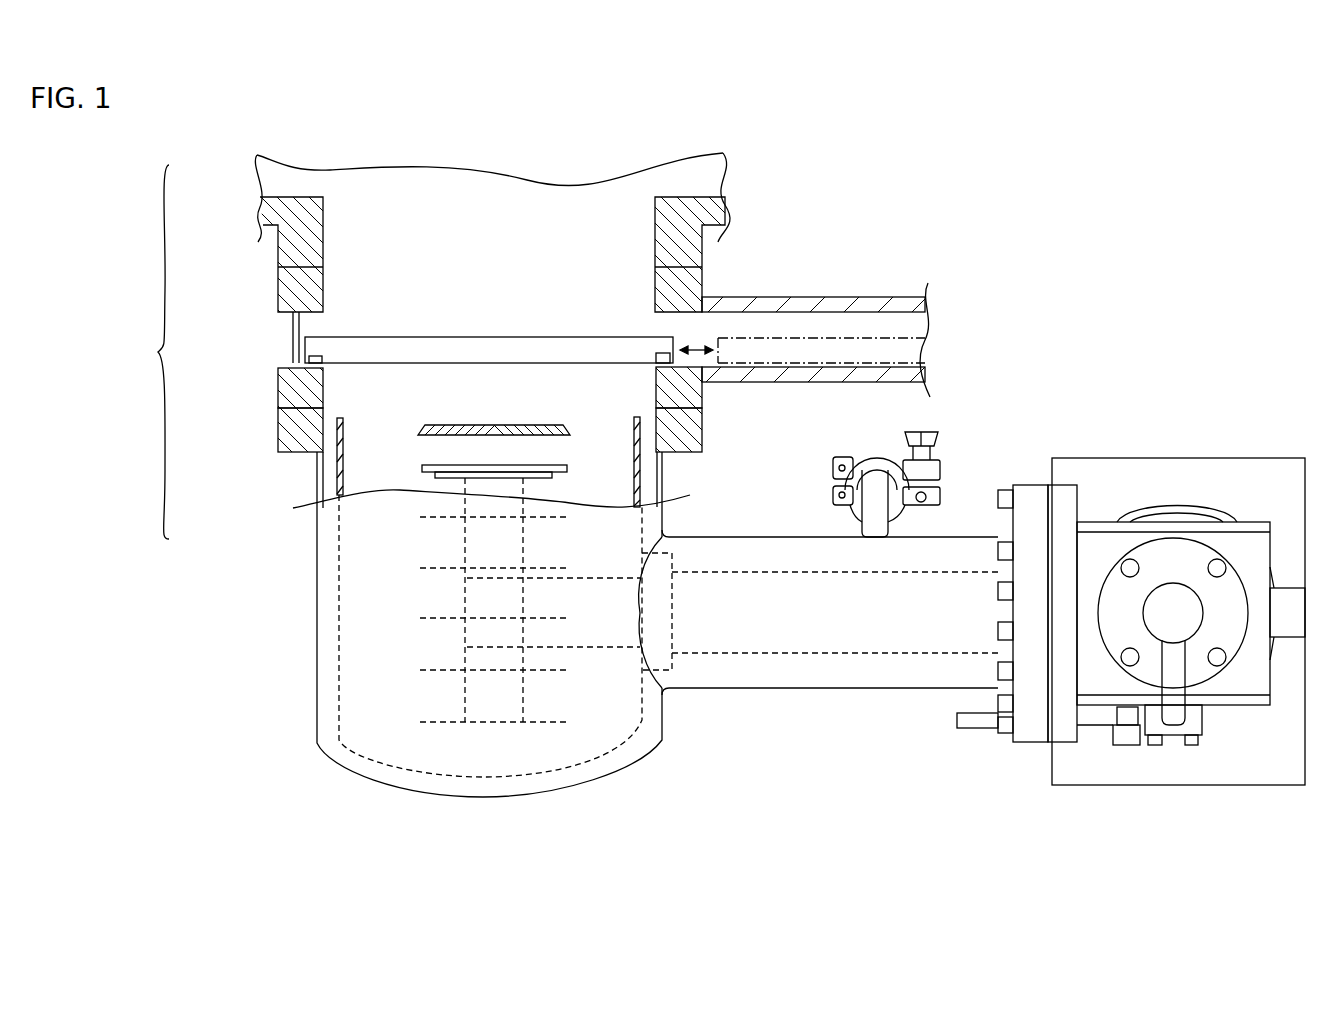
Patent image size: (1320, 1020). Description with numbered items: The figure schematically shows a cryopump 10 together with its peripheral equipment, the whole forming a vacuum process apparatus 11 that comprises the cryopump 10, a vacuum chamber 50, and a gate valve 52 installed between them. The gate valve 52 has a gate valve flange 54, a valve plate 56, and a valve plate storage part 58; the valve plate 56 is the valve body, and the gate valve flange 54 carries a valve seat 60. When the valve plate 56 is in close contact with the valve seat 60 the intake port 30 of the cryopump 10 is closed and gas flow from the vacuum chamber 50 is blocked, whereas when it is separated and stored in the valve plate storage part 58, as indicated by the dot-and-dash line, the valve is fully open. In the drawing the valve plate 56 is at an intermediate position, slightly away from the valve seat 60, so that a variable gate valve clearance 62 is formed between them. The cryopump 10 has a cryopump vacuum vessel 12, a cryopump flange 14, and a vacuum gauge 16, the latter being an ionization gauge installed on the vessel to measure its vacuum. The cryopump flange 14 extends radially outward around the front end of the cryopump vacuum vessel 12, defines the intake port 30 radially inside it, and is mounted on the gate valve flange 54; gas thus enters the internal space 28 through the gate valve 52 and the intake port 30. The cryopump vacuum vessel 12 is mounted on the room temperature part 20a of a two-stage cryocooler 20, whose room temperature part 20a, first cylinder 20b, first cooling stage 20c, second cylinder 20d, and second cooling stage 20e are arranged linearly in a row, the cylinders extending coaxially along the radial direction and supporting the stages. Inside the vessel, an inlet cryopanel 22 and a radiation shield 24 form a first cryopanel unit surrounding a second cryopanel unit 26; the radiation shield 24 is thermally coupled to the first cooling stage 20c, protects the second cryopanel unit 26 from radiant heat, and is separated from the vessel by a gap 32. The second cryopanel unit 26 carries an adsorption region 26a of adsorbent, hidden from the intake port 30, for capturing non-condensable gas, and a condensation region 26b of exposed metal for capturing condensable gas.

The cryopump 10 is at (284, 535).
The vacuum process apparatus 11 is at (147, 352).
The cryopump vacuum vessel 12 is at (612, 780).
The cryopump flange 14 is at (293, 425).
The vacuum gauge 16 is at (946, 431).
The cryocooler 20 is at (1131, 606).
The room temperature part 20a is at (1160, 785).
The first cylinder 20b is at (848, 653).
The first cooling stage 20c is at (673, 660).
The second cylinder 20d is at (613, 648).
The second cooling stage 20e is at (493, 648).
The inlet cryopanel 22 is at (572, 430).
The radiation shield 24 is at (567, 470).
The second cryopanel unit 26 is at (411, 623).
The adsorption region 26a is at (540, 493).
The condensation region 26b is at (545, 477).
The internal space 28 is at (388, 472).
The intake port 30 is at (503, 397).
The gap 32 is at (333, 470).
The vacuum chamber 50 is at (293, 207).
The gate valve 52 is at (272, 297).
The gate valve flange 54 is at (293, 390).
The valve plate 56 is at (485, 338).
The valve plate storage part 58 is at (848, 302).
The valve seat 60 is at (296, 356).
The gate valve clearance 62 is at (338, 360).